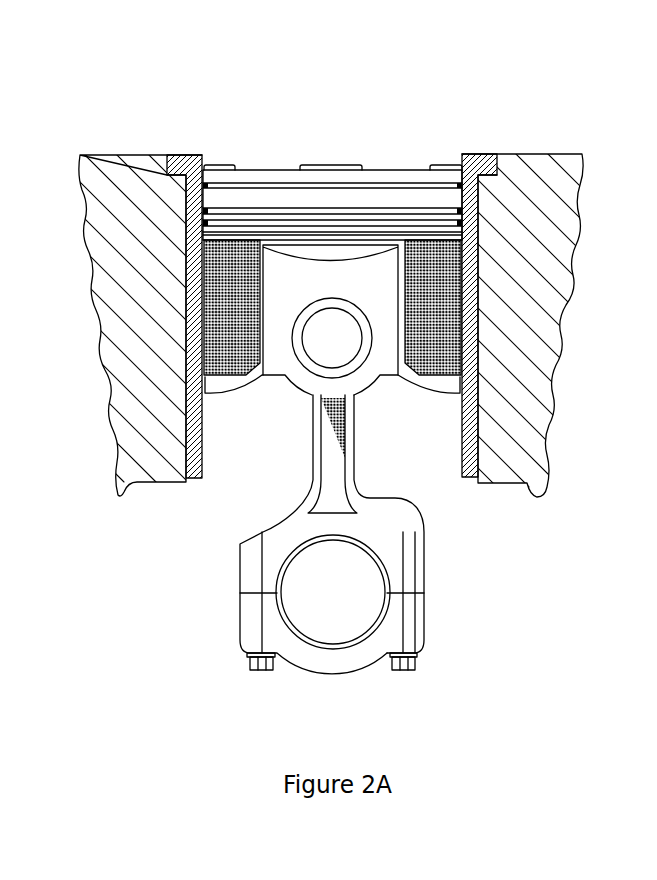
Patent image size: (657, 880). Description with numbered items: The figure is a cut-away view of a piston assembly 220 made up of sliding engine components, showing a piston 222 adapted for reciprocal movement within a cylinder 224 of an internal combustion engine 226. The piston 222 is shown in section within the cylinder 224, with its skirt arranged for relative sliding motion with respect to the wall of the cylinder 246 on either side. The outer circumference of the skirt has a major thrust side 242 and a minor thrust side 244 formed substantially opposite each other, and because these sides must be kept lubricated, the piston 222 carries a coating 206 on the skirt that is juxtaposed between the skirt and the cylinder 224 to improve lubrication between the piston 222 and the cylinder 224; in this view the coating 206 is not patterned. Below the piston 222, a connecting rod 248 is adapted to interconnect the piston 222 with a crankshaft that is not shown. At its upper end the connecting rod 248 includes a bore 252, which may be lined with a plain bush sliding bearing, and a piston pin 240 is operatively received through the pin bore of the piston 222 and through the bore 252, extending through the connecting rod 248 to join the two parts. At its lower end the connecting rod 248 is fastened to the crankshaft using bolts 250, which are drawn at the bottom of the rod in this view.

The piston assembly 220 is at (182, 106).
The piston 222 is at (359, 292).
The cylinder 224 is at (228, 505).
The internal combustion engine 226 is at (167, 290).
The coating 206 is at (438, 320).
The piston pin 240 is at (342, 355).
The major thrust side 242 is at (207, 380).
The minor thrust side 244 is at (452, 380).
The cylinder wall 246 is at (202, 453).
The connecting rod 248 is at (375, 498).
The bolts 250 is at (262, 670).
The bore 252 is at (358, 350).